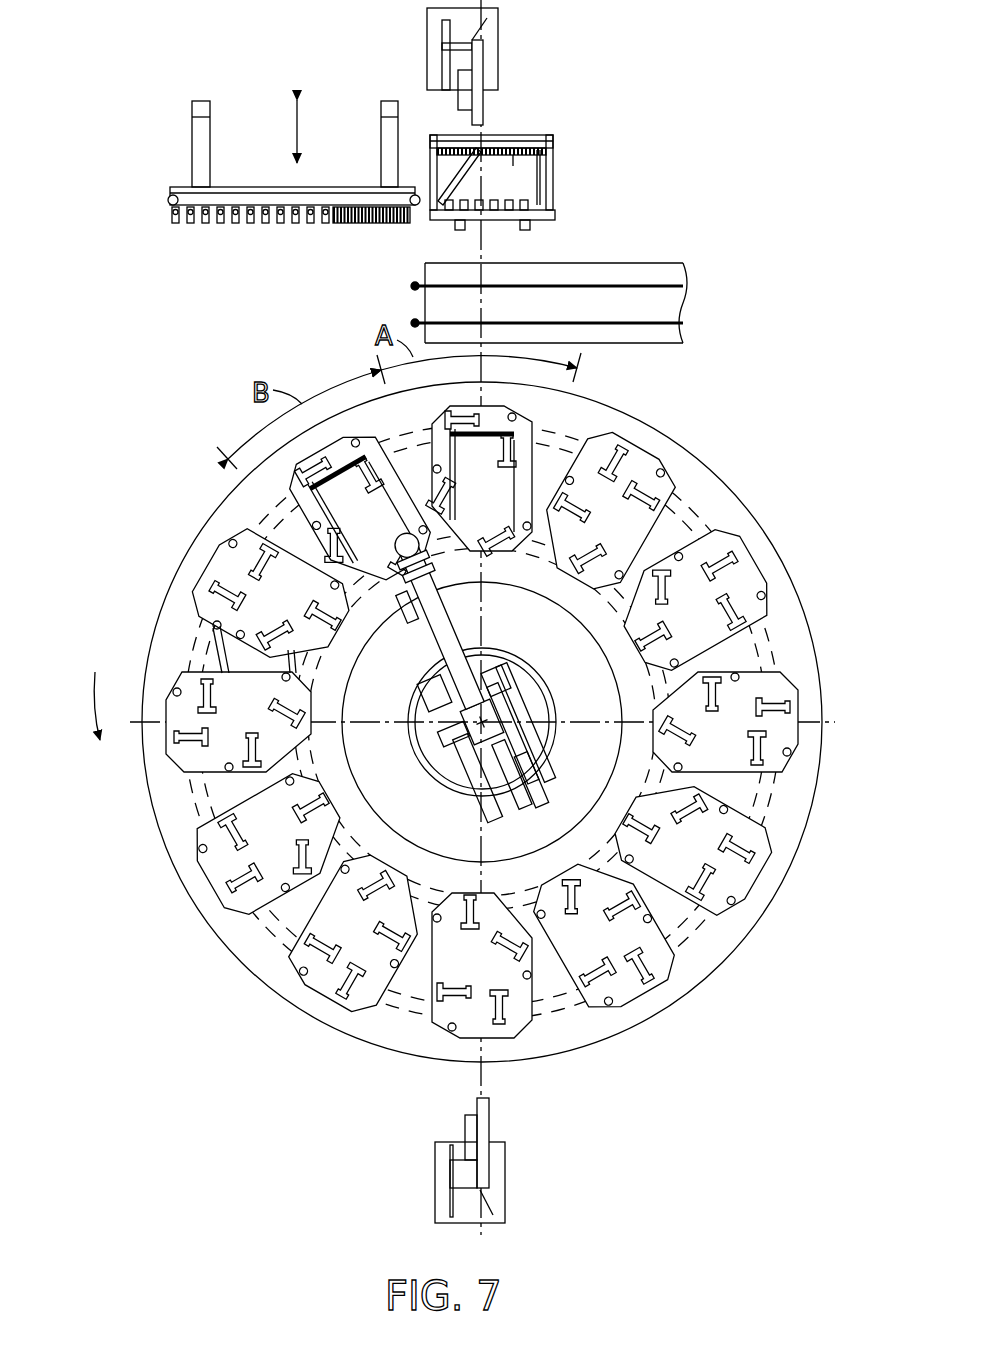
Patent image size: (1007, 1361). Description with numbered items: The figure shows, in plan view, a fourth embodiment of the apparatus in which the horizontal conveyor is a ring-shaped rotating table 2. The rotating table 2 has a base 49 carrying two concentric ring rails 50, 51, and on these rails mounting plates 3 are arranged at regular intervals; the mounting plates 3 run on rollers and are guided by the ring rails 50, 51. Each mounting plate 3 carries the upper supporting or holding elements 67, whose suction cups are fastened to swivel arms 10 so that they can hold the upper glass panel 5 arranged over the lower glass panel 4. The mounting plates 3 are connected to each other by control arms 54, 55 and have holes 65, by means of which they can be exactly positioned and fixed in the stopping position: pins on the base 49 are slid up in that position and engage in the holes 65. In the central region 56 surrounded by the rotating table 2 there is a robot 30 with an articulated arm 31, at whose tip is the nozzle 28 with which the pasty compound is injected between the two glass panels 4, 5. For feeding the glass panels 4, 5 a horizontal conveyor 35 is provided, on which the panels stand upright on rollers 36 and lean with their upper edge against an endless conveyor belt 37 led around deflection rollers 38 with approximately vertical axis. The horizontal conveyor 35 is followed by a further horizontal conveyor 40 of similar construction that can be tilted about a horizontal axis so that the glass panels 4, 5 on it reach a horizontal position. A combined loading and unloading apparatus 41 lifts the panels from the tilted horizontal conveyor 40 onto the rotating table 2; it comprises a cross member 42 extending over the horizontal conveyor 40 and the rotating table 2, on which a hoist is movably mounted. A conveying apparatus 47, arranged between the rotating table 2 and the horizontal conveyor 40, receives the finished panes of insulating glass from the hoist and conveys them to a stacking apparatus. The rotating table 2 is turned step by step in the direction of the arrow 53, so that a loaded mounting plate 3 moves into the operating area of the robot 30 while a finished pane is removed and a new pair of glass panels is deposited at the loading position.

The rotating table 2 is at (783, 623).
The mounting plate 3 is at (717, 873).
The glass panel 4 is at (450, 462).
The glass panel 5 is at (412, 432).
The swivel arm 10 is at (390, 930).
The nozzle 28 is at (397, 556).
The robot 30 is at (517, 700).
The articulated arm 31 is at (438, 620).
The horizontal conveyor 35 is at (268, 190).
The rollers 36 is at (217, 225).
The endless conveyor belt 37 is at (246, 187).
The deflection rollers 38 is at (170, 196).
The horizontal conveyor 40 is at (553, 192).
The loading and unloading apparatus 41 is at (517, 33).
The cross member 42 is at (485, 112).
The conveying apparatus 47 is at (673, 305).
The base 49 is at (165, 823).
The ring rail 50 is at (383, 821).
The ring rail 51 is at (270, 937).
The arrow 53 is at (66, 706).
The control arm 54 is at (303, 662).
The control arm 55 is at (212, 652).
The central region 56 is at (597, 773).
The holes 65 is at (357, 443).
The upper supporting or holding elements 67 is at (358, 969).